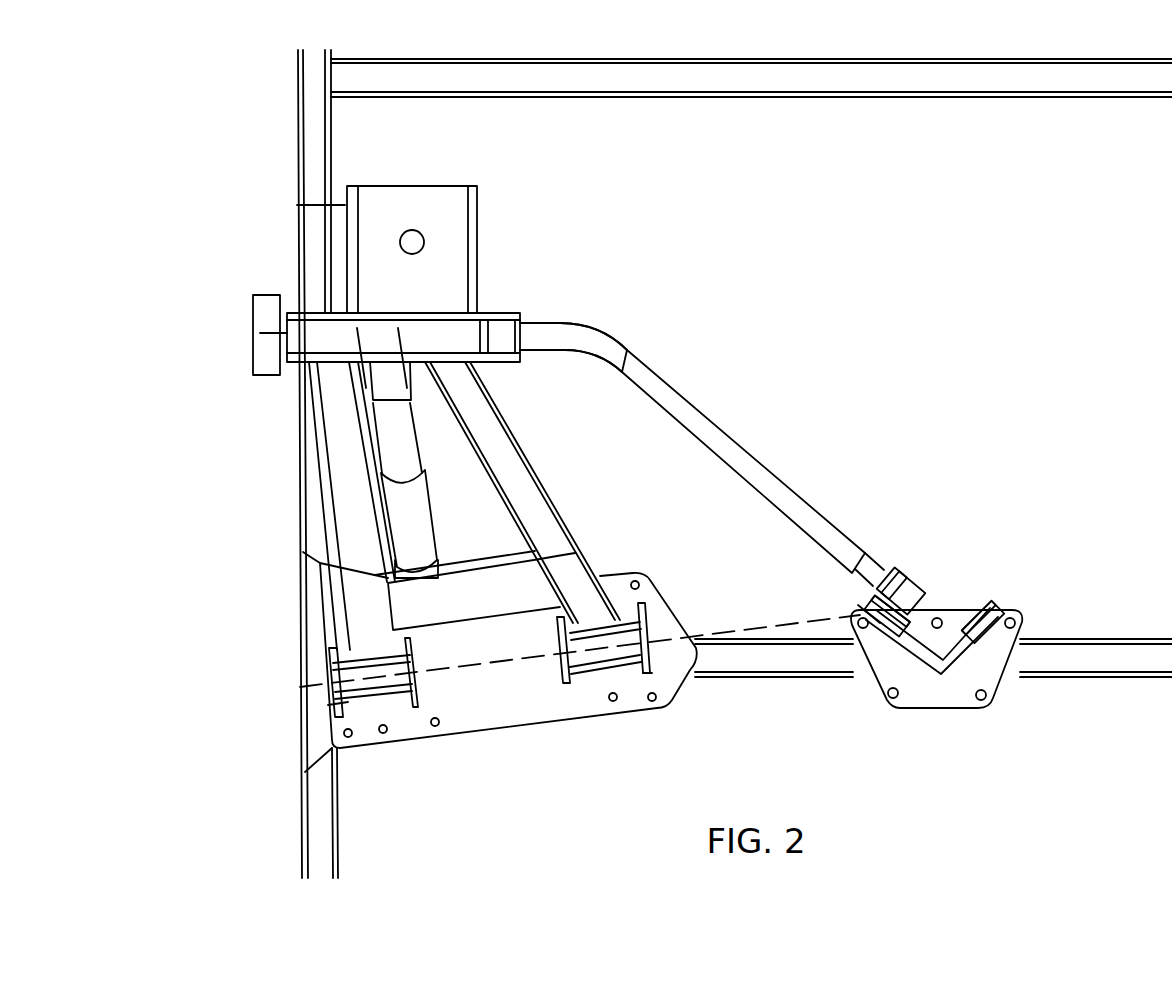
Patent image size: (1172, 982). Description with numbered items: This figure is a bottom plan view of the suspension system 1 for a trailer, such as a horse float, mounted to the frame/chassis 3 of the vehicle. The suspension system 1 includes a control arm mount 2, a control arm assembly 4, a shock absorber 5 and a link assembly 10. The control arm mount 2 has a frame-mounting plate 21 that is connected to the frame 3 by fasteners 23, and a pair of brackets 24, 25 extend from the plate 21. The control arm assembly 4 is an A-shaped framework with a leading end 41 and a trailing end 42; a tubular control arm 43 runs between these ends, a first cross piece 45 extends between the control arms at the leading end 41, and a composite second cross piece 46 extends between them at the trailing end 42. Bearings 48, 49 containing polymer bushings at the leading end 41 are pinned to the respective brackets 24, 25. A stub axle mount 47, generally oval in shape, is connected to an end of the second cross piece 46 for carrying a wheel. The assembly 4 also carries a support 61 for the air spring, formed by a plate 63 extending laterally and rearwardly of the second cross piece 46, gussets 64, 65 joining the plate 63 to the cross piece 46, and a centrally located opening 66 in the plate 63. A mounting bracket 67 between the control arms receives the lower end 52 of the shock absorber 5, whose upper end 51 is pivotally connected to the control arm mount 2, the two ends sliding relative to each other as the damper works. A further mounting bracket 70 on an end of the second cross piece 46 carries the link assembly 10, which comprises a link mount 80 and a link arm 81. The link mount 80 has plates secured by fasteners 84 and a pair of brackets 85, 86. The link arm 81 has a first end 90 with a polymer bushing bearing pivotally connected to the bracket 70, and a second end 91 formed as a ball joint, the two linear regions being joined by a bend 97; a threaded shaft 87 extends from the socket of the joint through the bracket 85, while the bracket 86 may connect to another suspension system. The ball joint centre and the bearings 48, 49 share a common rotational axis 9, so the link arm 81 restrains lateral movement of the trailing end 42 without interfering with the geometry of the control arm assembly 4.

The suspension system 1 is at (275, 752).
The control arm mount 2 is at (500, 687).
The frame/chassis 3 is at (800, 85).
The control arm assembly 4 is at (316, 508).
The shock absorber 5 is at (406, 468).
The common rotational axis 9 is at (300, 688).
The link assembly 10 is at (908, 567).
The frame-mounting plate 21 is at (490, 730).
The fasteners 23 is at (350, 737).
The bracket 24 is at (335, 700).
The bracket 25 is at (644, 672).
The leading end 41 is at (330, 601).
The trailing end 42 is at (280, 331).
The control arm 43 is at (322, 476).
The first cross piece 45 is at (515, 613).
The second cross piece 46 is at (470, 330).
The stub axle mount 47 is at (282, 328).
The bearing 48 is at (345, 662).
The bearing 49 is at (655, 608).
The upper end 51 is at (420, 520).
The lower end 52 is at (378, 420).
The support 61 is at (455, 190).
The plate 63 is at (368, 205).
The gusset 64 is at (298, 205).
The gusset 65 is at (418, 240).
The opening 66 is at (472, 220).
The mounting bracket 67 is at (362, 355).
The mounting bracket 70 is at (500, 336).
The link mount 80 is at (949, 620).
The link arm 81 is at (692, 382).
The fasteners 84 is at (1012, 640).
The bracket 85 is at (905, 705).
The bracket 86 is at (968, 618).
The threaded shaft 87 is at (866, 624).
The first end 90 is at (535, 325).
The second end 91 is at (888, 578).
The bend 97 is at (628, 345).